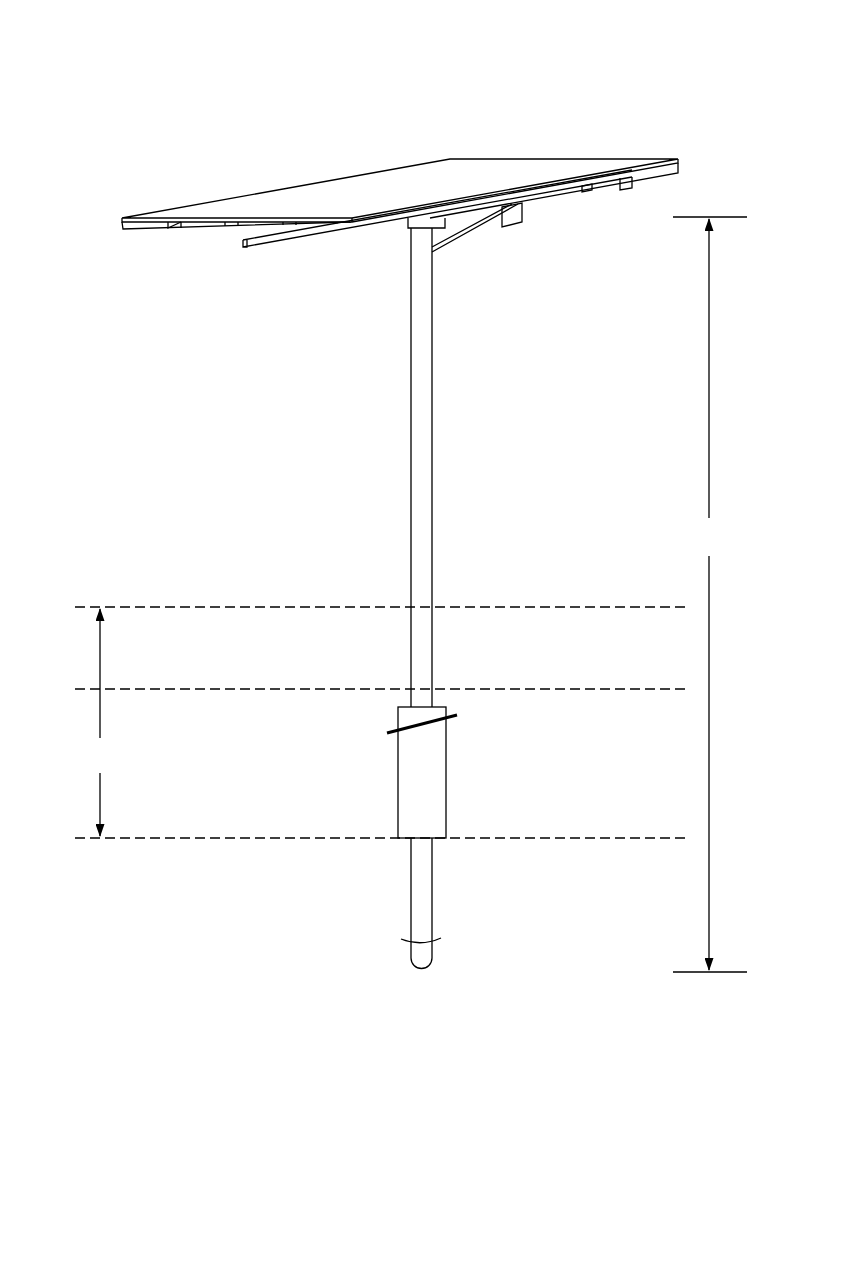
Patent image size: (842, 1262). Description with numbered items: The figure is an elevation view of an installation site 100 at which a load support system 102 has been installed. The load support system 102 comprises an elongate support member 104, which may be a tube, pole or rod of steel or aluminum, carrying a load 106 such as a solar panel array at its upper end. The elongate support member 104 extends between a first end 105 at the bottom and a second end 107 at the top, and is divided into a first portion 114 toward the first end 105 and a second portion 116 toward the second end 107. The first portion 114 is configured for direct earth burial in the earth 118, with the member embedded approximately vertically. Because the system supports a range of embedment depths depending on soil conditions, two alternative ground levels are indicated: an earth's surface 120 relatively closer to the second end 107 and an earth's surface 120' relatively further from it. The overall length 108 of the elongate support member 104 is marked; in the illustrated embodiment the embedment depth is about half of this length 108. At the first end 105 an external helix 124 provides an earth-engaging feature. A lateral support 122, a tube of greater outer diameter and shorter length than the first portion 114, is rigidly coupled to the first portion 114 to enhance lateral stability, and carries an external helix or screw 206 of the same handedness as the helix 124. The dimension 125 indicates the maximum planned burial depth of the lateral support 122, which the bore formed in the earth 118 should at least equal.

The installation site 100 is at (447, 101).
The load support system 102 is at (265, 172).
The elongate support member 104 is at (438, 551).
The first end 105 is at (422, 970).
The load 106 is at (563, 161).
The second end 107 is at (409, 222).
The length 108 is at (710, 594).
The first portion 114 is at (405, 891).
The second portion 116 is at (405, 456).
The earth 118 is at (652, 809).
The earth's surface 120 is at (380, 579).
The earth's surface 120' is at (380, 662).
The lateral support 122 is at (450, 777).
The external helix 124 is at (436, 940).
The dimension 125 is at (102, 722).
The external helix or screw 206 is at (387, 733).